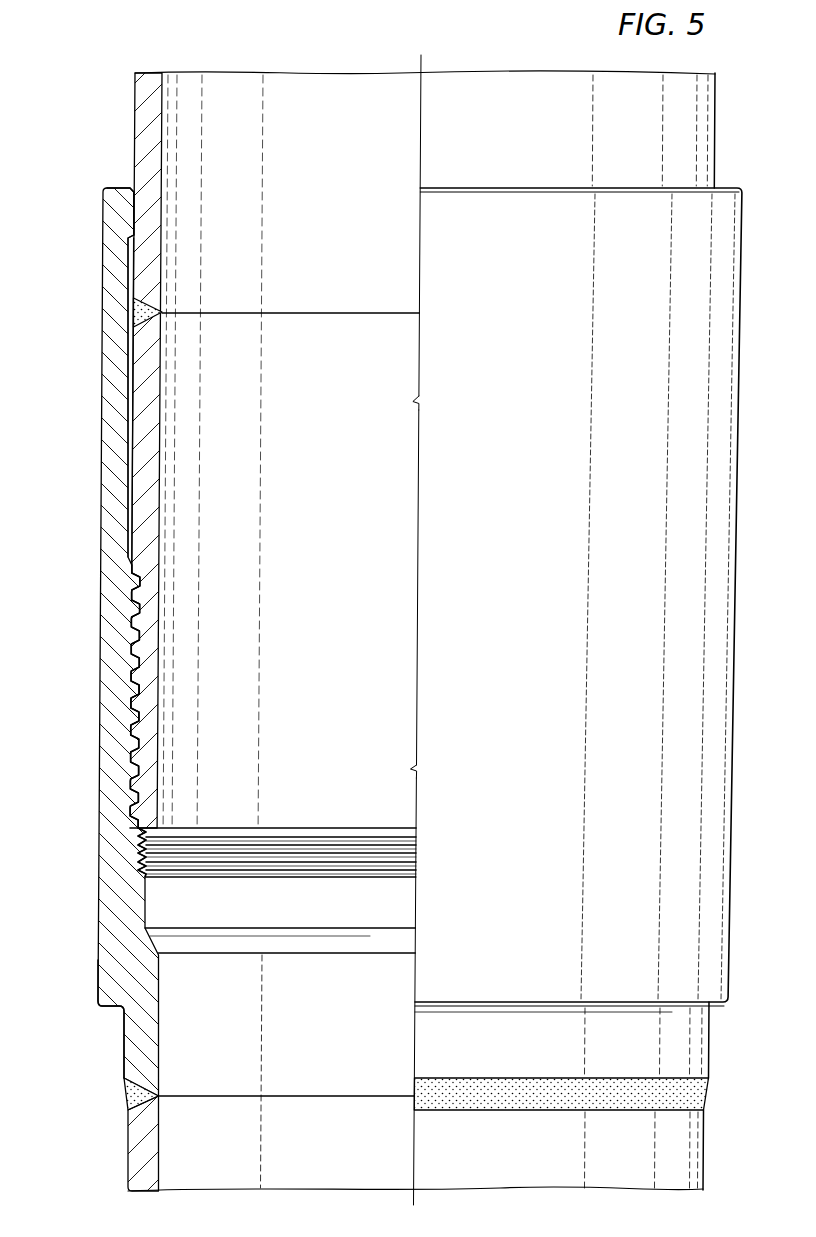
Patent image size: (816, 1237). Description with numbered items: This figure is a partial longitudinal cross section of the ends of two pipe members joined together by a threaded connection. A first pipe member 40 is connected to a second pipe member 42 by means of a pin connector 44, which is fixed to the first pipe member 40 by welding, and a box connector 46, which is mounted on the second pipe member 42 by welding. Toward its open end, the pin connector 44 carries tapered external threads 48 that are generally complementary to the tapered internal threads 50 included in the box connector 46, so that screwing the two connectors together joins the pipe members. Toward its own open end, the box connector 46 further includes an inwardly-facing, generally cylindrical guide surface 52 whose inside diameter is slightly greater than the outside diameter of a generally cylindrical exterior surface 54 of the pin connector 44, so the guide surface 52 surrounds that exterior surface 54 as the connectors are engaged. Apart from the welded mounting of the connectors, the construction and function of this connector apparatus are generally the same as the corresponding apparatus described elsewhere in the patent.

The first pipe member 40 is at (114, 114).
The second pipe member 42 is at (108, 1166).
The pin connector 44 is at (128, 440).
The box connector 46 is at (110, 968).
The external threads 48 is at (138, 622).
The internal threads 50 is at (133, 688).
The guide surface 52 is at (131, 213).
The exterior surface 54 is at (131, 274).